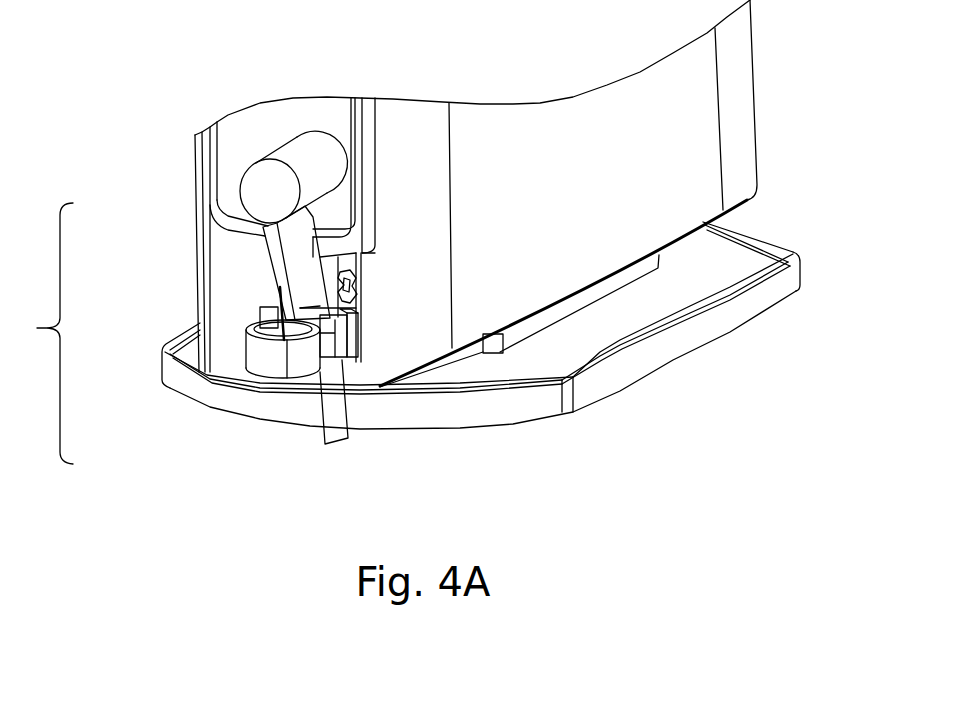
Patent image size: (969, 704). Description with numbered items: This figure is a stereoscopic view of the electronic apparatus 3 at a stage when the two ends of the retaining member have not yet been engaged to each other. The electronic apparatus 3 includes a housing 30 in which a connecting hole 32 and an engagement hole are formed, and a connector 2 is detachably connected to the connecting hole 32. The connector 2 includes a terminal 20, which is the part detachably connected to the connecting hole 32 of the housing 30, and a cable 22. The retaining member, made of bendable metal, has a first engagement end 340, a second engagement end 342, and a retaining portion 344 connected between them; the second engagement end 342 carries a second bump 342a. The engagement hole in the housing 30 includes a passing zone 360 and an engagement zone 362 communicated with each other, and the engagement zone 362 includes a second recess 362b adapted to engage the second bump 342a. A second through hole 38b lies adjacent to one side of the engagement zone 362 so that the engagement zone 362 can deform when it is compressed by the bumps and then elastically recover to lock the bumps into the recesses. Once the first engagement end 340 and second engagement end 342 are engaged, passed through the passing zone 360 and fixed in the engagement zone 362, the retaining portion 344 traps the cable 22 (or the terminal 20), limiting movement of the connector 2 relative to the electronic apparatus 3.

The connector 2 is at (175, 333).
The electronic apparatus 3 is at (217, 72).
The terminal 20 is at (265, 186).
The cable 22 is at (320, 403).
The housing 30 is at (627, 227).
The connecting hole 32 is at (333, 142).
The second through hole 38b is at (362, 283).
The first engagement end 340 is at (262, 308).
The second engagement end 342 is at (367, 338).
The second bump 342a is at (355, 362).
The retaining portion 344 is at (262, 355).
The passing zone 360 is at (362, 308).
The engagement zone 362 is at (350, 253).
The second recess 362b is at (362, 262).